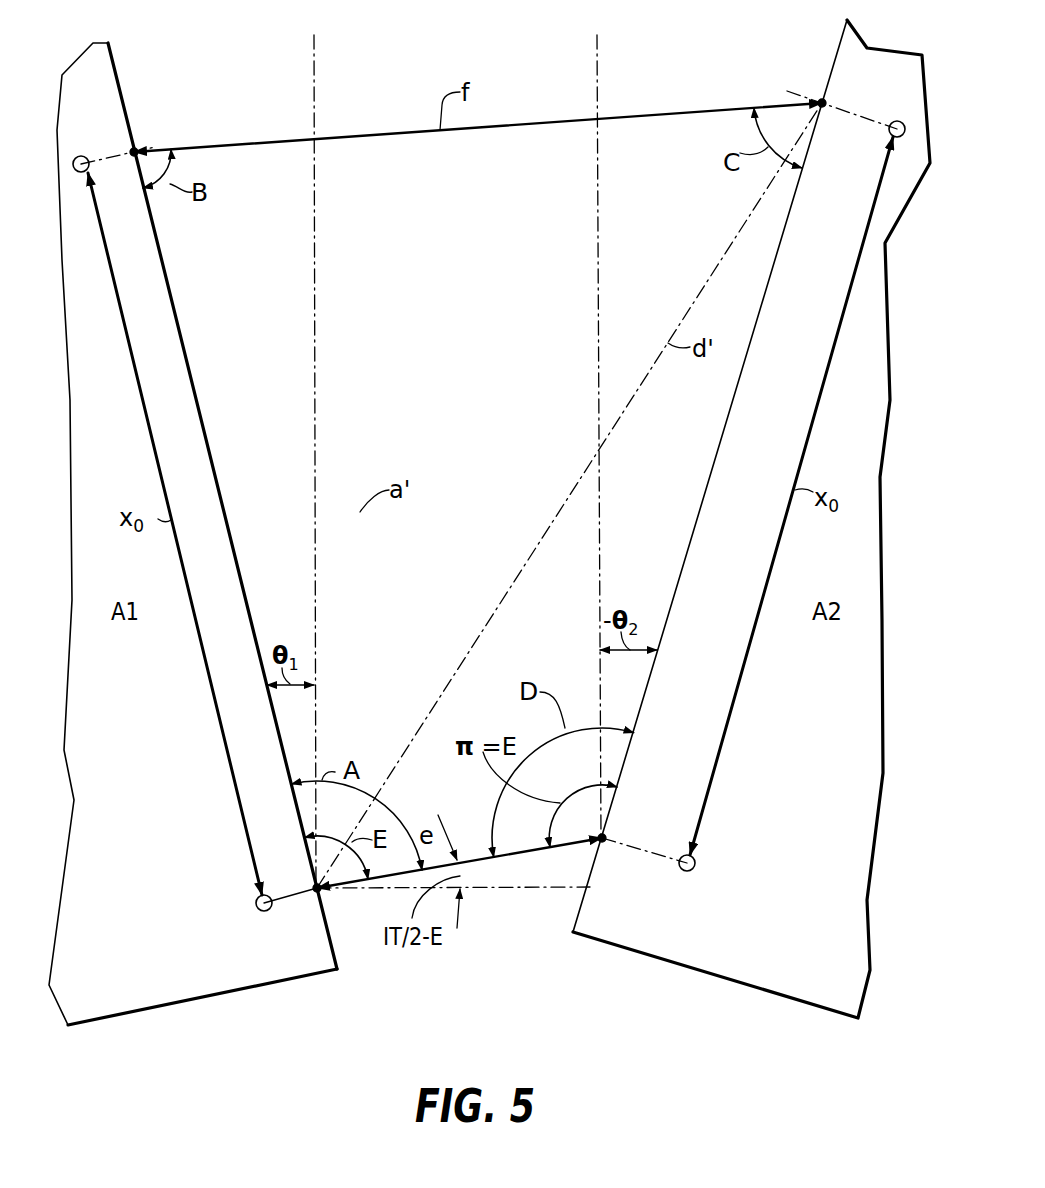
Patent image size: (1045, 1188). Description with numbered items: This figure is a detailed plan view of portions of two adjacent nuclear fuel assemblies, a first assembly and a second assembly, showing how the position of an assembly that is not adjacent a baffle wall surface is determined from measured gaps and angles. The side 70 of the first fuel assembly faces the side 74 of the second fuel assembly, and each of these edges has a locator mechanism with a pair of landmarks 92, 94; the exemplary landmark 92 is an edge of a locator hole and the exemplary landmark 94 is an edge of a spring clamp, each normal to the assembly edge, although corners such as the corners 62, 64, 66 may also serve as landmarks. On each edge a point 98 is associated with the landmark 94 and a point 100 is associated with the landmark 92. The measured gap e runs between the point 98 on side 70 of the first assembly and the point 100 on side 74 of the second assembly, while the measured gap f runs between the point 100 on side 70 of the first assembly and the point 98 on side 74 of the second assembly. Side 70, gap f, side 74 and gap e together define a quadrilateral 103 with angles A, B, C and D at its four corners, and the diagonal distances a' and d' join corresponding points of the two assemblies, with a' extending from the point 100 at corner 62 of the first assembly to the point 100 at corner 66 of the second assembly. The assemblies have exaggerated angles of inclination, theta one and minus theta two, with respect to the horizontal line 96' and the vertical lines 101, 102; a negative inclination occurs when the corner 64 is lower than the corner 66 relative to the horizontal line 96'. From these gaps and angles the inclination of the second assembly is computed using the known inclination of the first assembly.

The corner 62 is at (109, 43).
The corner 64 is at (337, 969).
The corner 66 is at (573, 932).
The edge 70 is at (196, 398).
The edge 74 is at (737, 387).
The landmark 92 is at (81, 156).
The landmark 94 is at (897, 121).
The point 98 is at (822, 103).
The point 100 is at (134, 152).
The vertical line 101 is at (314, 412).
The vertical line 102 is at (597, 293).
The quadrilateral 103 is at (516, 152).
The horizontal line 96' is at (453, 903).